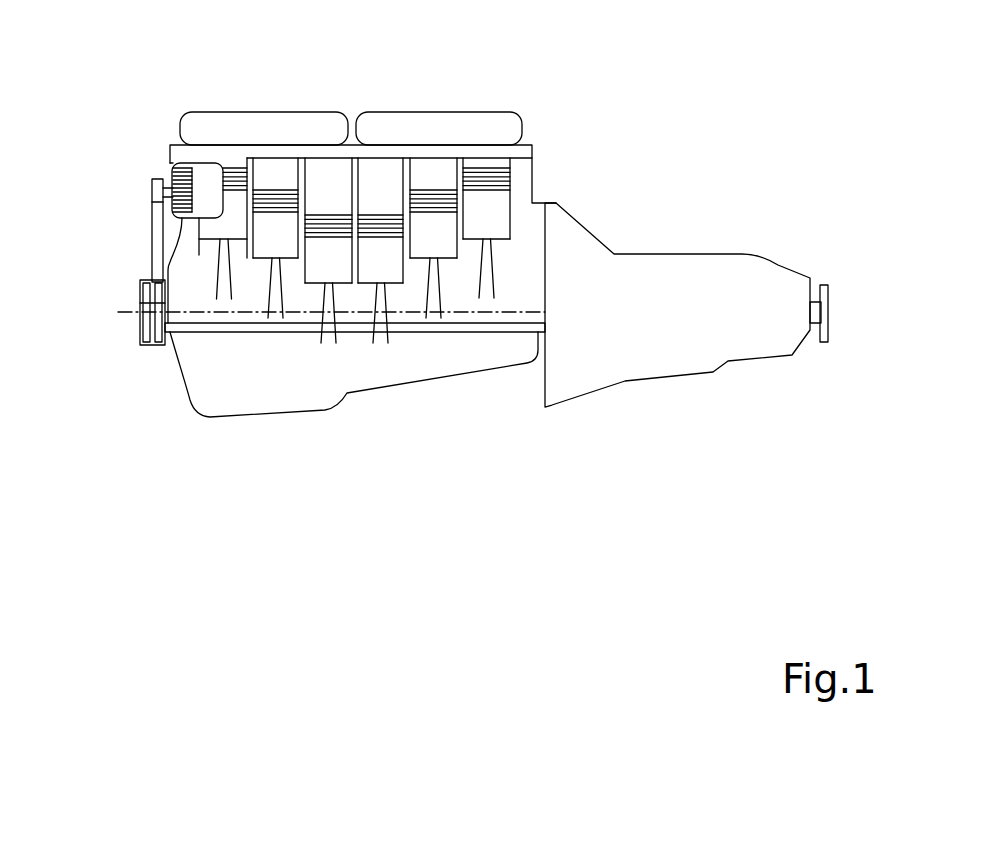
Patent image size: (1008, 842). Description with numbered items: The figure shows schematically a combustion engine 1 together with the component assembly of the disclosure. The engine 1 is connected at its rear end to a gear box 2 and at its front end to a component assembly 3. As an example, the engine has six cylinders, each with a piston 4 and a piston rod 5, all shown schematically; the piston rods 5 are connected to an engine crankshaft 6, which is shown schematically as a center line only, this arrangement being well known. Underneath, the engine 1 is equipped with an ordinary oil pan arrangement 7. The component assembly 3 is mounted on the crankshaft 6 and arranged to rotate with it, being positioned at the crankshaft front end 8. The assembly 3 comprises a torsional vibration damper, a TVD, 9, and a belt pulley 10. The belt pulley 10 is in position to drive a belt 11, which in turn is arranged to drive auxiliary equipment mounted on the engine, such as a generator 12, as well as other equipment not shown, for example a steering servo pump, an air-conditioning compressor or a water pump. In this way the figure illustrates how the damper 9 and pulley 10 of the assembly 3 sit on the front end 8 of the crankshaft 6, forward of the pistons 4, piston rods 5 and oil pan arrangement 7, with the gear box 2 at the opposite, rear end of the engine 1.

The combustion engine 1 is at (350, 88).
The gear box 2 is at (710, 288).
The component assembly 3 is at (112, 330).
The piston 4 is at (438, 230).
The piston rod 5 is at (438, 288).
The engine crankshaft 6 is at (468, 312).
The oil pan arrangement 7 is at (338, 377).
The crankshaft front end 8 is at (140, 303).
The torsional vibration damper 9 is at (143, 335).
The belt pulley 10 is at (158, 346).
The belt 11 is at (158, 255).
The generator 12 is at (208, 182).